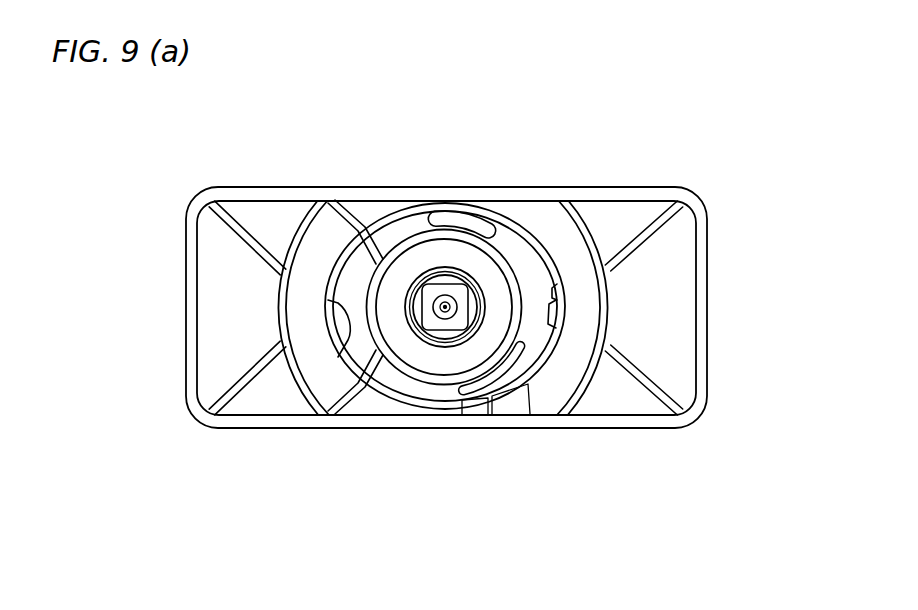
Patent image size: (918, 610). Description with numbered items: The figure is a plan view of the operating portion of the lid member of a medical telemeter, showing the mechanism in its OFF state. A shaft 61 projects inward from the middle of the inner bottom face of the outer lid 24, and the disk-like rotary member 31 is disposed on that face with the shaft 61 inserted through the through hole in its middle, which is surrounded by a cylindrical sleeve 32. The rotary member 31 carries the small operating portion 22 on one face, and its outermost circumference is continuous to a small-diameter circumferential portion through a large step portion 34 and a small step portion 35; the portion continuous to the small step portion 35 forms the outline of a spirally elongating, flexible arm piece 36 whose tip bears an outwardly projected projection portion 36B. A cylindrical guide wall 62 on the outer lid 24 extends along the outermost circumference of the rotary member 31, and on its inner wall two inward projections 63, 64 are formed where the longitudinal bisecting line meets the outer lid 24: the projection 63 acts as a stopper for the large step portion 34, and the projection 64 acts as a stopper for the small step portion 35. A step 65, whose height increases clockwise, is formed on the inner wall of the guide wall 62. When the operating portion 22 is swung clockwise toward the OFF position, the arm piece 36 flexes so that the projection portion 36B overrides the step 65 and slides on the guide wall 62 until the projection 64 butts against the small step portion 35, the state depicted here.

The outer lid 24 is at (708, 251).
The large step portion 34 is at (360, 267).
The rotary member 31 is at (421, 222).
The operating portion 22 is at (471, 215).
The arm piece 36 is at (490, 392).
The projection portion 36B is at (462, 406).
The step 65 is at (522, 392).
The shaft 61 is at (458, 297).
The sleeve 32 is at (423, 330).
The guide wall 62 is at (370, 216).
The projection 63 is at (345, 337).
The projection 64 is at (560, 325).
The small step portion 35 is at (556, 290).